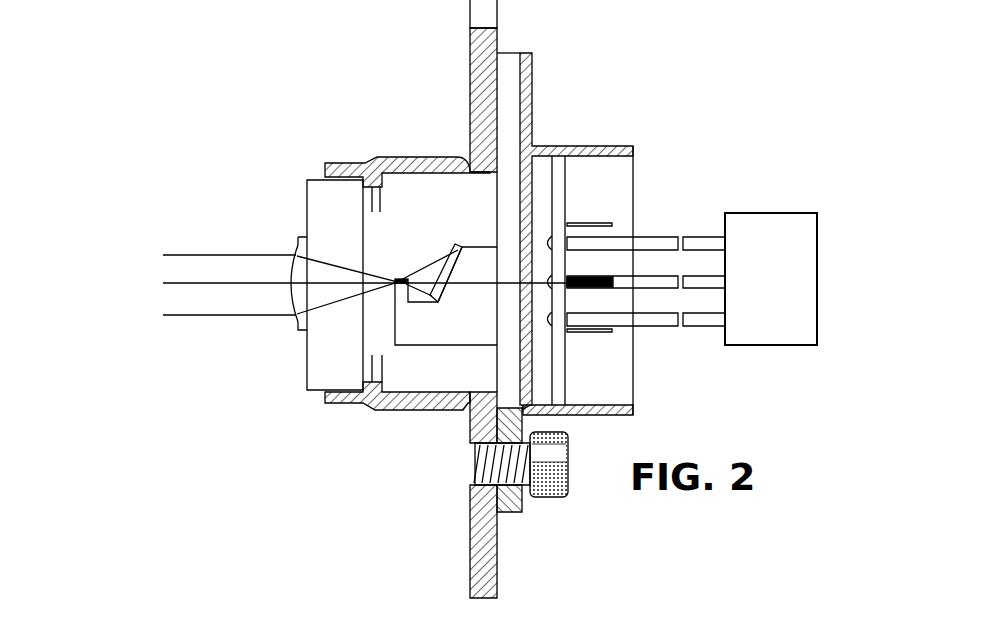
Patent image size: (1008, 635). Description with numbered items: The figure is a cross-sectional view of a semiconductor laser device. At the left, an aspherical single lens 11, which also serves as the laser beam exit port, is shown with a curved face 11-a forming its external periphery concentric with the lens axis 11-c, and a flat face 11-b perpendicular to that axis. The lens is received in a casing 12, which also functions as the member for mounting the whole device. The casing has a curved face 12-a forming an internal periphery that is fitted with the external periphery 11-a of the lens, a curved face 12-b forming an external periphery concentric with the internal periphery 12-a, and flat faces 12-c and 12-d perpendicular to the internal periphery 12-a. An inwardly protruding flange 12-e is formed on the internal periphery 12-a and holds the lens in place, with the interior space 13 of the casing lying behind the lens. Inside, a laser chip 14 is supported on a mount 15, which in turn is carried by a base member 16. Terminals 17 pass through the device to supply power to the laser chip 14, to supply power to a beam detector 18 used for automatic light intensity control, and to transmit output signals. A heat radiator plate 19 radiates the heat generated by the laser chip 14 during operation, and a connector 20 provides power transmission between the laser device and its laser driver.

The aspherical single lens 11 is at (318, 373).
The curved face of the lens 11-a is at (318, 396).
The flat face of the lens 11-b is at (307, 349).
The lens axis 11-c is at (197, 284).
The casing 12 is at (360, 403).
The curved face of the casing 12-a is at (340, 390).
The curved face of the casing 12-b is at (392, 410).
The flat face of the casing 12-c is at (470, 557).
The flat face of the casing 12-d is at (498, 557).
The inwardly protruding flange 12-e is at (367, 186).
The cavity 13 is at (417, 382).
The laser chip 14 is at (398, 280).
The mount 15 is at (443, 338).
The base member 16 is at (513, 55).
The terminals 17 is at (587, 223).
The beam detector 18 is at (448, 265).
The heat radiator plate 19 is at (558, 143).
The connector 20 is at (768, 213).